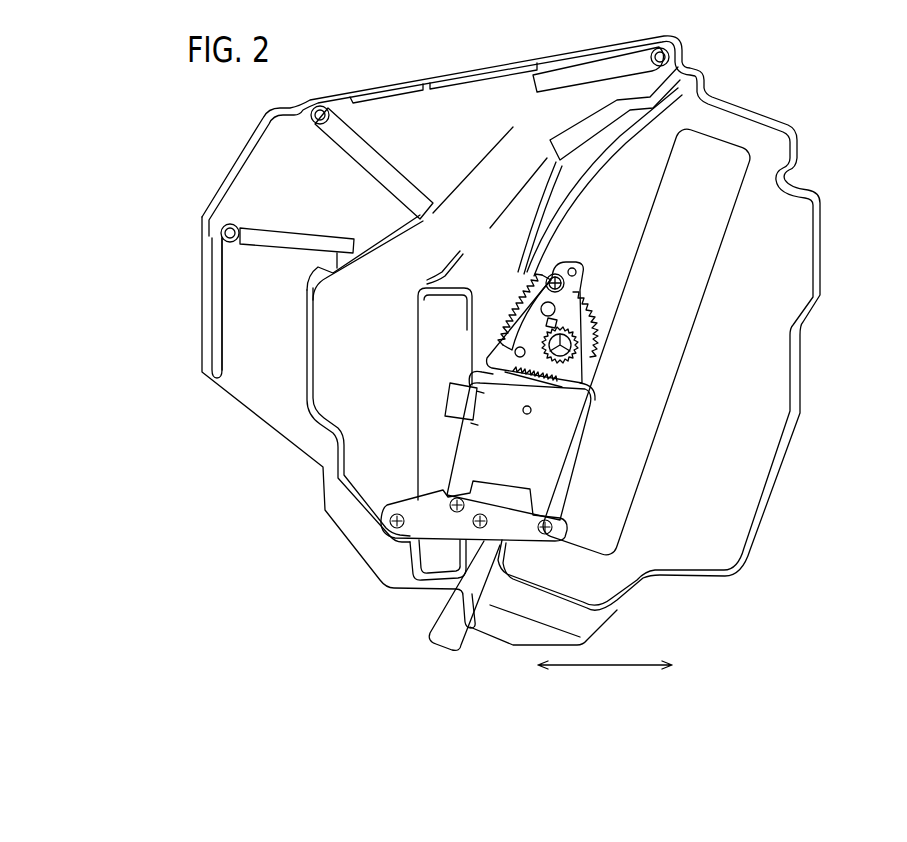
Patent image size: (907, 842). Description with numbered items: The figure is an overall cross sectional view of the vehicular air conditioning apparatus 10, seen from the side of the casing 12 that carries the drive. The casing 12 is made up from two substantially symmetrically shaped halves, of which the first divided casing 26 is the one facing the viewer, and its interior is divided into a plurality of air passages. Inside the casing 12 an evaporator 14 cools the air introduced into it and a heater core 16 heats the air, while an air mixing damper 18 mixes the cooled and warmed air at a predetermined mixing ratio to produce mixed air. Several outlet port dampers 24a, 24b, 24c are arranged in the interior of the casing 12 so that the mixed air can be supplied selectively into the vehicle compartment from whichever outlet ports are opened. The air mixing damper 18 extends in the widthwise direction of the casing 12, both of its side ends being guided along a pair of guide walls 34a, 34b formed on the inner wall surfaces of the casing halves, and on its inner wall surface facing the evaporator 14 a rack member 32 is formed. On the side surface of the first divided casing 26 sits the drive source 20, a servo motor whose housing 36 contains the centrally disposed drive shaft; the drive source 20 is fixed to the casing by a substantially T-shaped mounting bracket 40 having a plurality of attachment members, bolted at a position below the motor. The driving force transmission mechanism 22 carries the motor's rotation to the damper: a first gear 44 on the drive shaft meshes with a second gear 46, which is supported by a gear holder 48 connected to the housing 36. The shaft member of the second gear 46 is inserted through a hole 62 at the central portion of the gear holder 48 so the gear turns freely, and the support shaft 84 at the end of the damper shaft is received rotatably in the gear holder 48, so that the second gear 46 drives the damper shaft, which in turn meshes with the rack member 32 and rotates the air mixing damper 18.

The vehicular air conditioning apparatus 10 is at (805, 78).
The casing 12 is at (834, 227).
The evaporator 14 is at (706, 255).
The heater core 16 is at (445, 392).
The air mixing damper 18 is at (511, 282).
The drive source 20 is at (468, 455).
The driving force transmission mechanism 22 is at (578, 495).
The outlet port damper 24a is at (576, 78).
The outlet port damper 24b is at (388, 172).
The outlet port damper 24c is at (297, 242).
The first divided casing 26 is at (168, 308).
The rack member 32 is at (507, 309).
The guide wall 34a is at (557, 200).
The guide wall 34b is at (583, 188).
The housing 36 is at (560, 447).
The mounting bracket 40 is at (441, 527).
The first gear 44 is at (535, 393).
The second gear 46 is at (609, 341).
The gear holder 48 is at (584, 304).
The hole 62 is at (578, 355).
The support shaft 84 is at (556, 312).